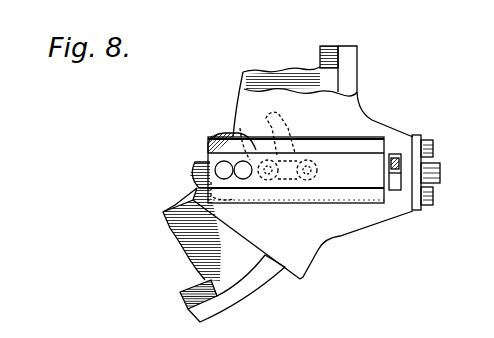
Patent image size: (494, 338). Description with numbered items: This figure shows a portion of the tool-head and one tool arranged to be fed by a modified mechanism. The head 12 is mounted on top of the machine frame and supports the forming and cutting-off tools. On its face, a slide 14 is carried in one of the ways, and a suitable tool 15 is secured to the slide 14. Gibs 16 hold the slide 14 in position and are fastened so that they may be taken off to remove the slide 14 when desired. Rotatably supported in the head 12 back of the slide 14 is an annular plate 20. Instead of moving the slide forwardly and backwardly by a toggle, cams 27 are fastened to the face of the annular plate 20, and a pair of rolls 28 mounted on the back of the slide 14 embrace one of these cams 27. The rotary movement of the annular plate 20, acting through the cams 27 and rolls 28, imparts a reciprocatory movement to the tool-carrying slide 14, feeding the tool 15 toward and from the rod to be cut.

The head 12 is at (368, 48).
The slide 14 is at (358, 150).
The tool 15 is at (197, 166).
The gibs 16 is at (296, 165).
The annular plate 20 is at (190, 259).
The cams 27 is at (287, 128).
The rolls 28 is at (305, 180).